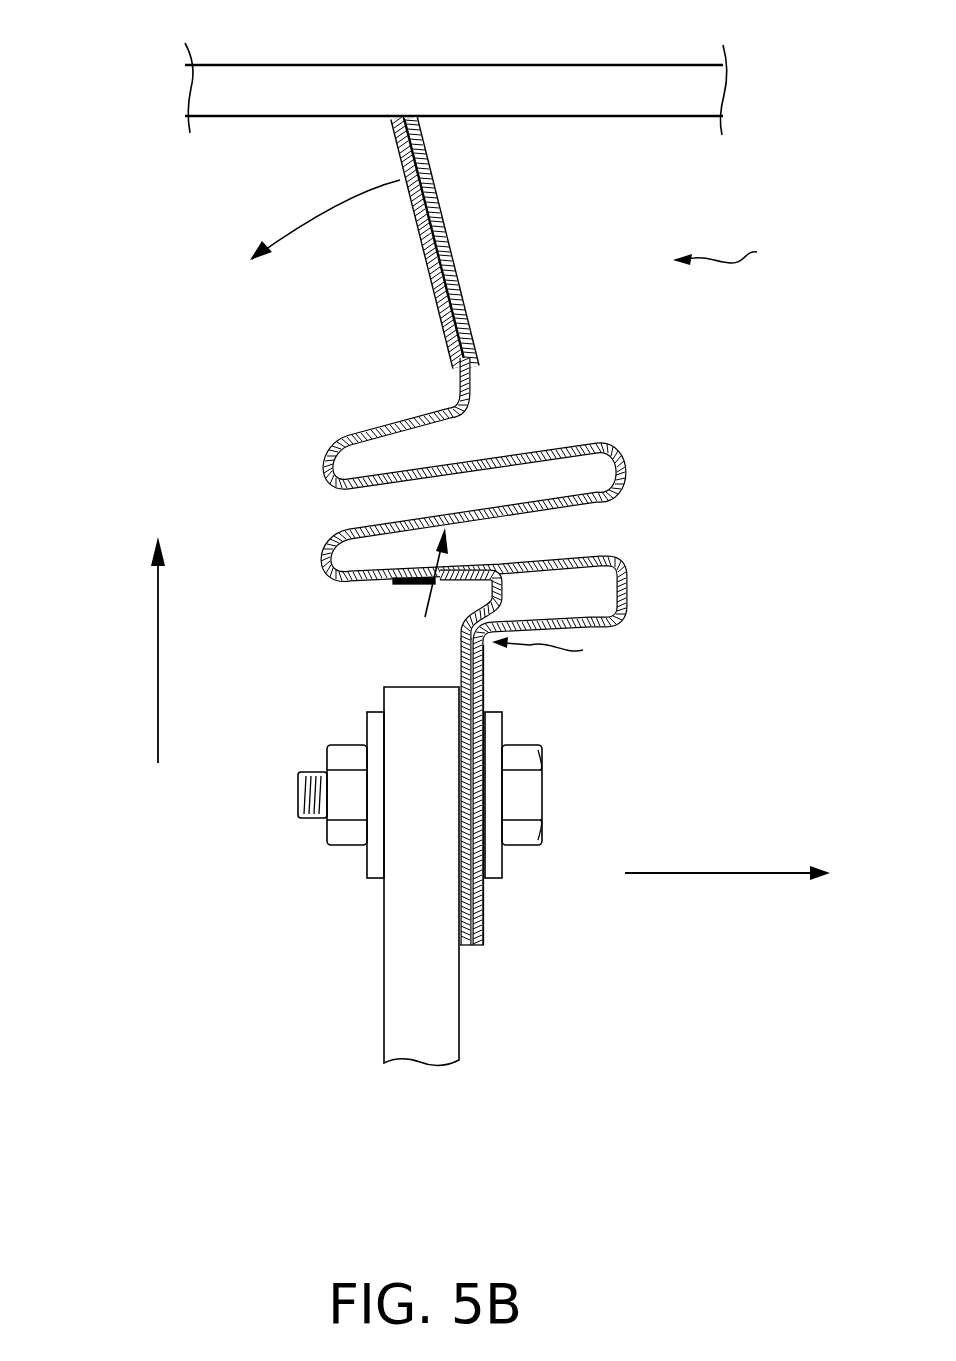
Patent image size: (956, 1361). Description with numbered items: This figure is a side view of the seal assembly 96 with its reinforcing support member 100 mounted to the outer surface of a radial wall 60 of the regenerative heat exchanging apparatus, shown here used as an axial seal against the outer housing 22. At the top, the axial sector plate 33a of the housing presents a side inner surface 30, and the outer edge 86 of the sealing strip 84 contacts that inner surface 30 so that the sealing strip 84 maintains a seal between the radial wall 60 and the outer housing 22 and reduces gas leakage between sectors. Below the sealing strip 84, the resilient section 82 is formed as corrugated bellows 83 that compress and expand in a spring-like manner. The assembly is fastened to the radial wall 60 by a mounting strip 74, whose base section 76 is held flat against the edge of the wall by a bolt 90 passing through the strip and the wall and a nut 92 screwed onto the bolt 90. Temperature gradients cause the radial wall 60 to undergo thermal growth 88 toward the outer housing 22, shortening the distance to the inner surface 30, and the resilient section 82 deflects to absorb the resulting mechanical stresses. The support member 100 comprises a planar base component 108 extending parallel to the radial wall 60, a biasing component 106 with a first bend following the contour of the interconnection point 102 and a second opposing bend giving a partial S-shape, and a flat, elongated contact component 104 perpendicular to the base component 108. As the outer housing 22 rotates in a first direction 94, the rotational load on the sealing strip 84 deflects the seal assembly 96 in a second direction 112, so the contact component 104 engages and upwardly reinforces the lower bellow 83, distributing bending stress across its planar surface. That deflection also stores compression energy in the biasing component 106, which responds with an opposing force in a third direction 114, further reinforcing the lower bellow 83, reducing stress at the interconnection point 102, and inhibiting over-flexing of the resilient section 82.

The outer housing 22 is at (456, 92).
The axial sector plate 33a is at (330, 64).
The side inner surface 30 is at (606, 118).
The sealing strip 84 is at (437, 242).
The outer edge of the sealing strip 86 is at (392, 123).
The second direction of rotation 112 is at (282, 232).
The radial seal 96 is at (754, 257).
The resilient section 82 is at (484, 651).
The corrugated bellows 83 is at (322, 454).
The third direction 114 is at (450, 540).
The contact component 104 is at (410, 583).
The biasing component 106 is at (490, 583).
The support member 100 is at (457, 650).
The interconnection point 102 is at (563, 655).
The mounting strip 74 is at (489, 690).
The base section 76 is at (487, 912).
The radial wall 60 is at (463, 1010).
The base component 108 is at (460, 830).
The bolt 90 is at (543, 790).
The nut 92 is at (327, 838).
The thermal growth 88 is at (158, 742).
The first direction of rotation 94 is at (737, 873).